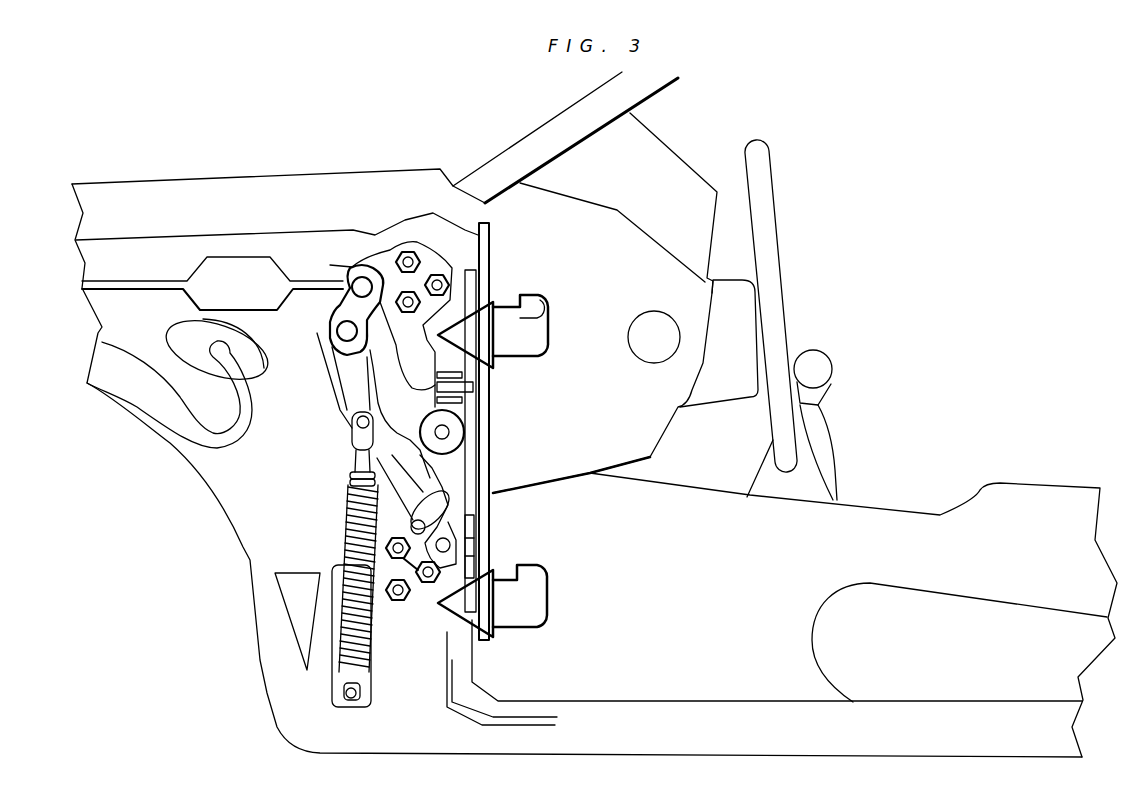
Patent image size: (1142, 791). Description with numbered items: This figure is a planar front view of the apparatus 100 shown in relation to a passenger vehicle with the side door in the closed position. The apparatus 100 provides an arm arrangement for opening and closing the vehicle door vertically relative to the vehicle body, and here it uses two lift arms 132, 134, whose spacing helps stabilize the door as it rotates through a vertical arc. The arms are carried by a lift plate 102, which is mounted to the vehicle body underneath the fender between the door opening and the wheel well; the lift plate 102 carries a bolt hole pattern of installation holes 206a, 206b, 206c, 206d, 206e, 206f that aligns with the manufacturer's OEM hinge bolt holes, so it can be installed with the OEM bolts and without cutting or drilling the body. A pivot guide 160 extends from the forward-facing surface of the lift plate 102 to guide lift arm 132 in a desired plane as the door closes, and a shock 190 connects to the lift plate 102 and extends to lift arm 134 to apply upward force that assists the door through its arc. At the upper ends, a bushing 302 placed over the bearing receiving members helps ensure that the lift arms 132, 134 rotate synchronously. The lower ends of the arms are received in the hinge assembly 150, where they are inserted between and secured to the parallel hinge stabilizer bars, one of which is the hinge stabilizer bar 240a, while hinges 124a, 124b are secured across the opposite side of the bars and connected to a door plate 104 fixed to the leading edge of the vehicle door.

The apparatus 100 is at (333, 262).
The lift plate 102 is at (394, 643).
The door plate 104 is at (483, 253).
The hinge 124a is at (467, 297).
The hinge 124b is at (468, 547).
The lift arm 132 is at (385, 397).
The lift arm 134 is at (345, 393).
The hinge assembly 150 is at (470, 258).
The pivot guide 160 is at (437, 510).
The shock 190 is at (347, 543).
The installation hole 206a is at (398, 603).
The installation hole 206b is at (428, 585).
The installation hole 206c is at (450, 650).
The installation hole 206d is at (398, 252).
The installation hole 206e is at (414, 292).
The installation hole 206f is at (437, 273).
The hinge stabilizer bar 240a is at (457, 470).
The bushing 302 is at (343, 320).